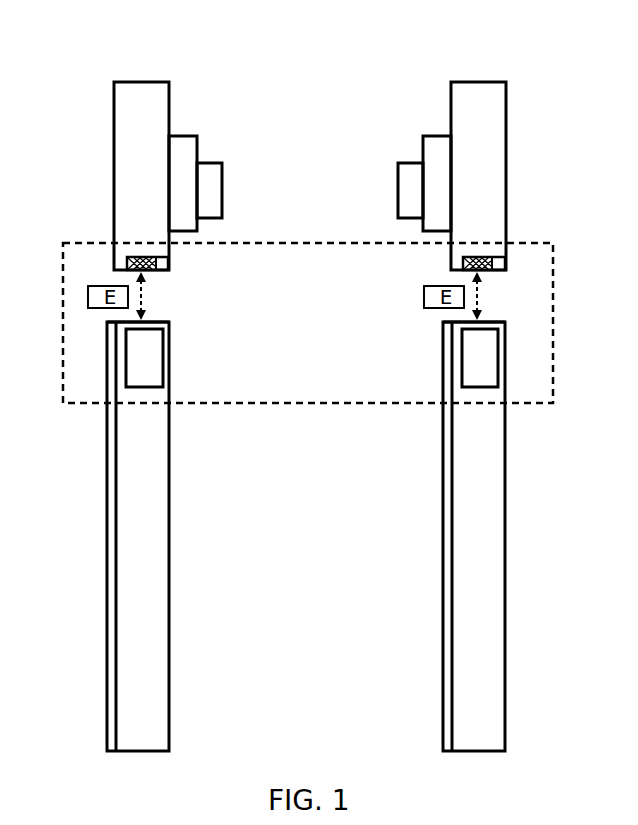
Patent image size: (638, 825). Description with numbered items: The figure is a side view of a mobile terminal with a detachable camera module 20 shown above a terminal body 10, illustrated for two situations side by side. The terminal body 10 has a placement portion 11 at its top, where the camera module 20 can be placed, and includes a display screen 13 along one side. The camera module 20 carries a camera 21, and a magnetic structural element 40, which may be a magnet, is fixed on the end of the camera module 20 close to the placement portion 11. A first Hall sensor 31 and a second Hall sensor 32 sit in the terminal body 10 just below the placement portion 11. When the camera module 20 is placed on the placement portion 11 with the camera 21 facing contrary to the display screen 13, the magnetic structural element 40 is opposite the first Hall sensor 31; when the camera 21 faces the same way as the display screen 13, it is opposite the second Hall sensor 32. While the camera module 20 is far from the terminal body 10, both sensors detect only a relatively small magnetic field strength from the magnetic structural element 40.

The terminal body 10 is at (163, 505).
The placement portion 11 is at (153, 322).
The display screen 13 is at (112, 500).
The camera module 20 is at (139, 98).
The camera 21 is at (207, 183).
The first Hall sensor 31 is at (153, 370).
The second Hall sensor 32 is at (477, 362).
The magnetic structural element 40 is at (169, 263).